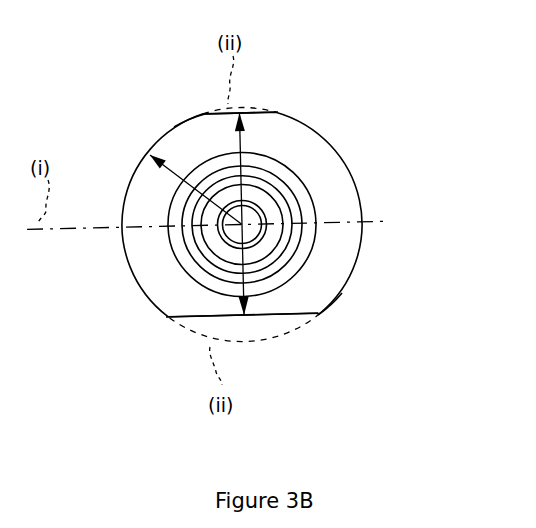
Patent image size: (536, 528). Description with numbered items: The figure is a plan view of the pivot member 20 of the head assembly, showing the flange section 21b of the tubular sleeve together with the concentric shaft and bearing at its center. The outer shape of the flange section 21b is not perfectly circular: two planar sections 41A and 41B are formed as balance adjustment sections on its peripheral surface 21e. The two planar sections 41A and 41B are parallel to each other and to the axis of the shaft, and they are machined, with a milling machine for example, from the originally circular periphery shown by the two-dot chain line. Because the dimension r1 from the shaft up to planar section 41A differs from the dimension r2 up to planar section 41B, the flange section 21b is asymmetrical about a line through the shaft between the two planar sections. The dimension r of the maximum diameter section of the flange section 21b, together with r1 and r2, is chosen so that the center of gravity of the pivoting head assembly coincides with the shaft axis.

The pivot member 20 is at (265, 225).
The flange section 21b is at (175, 127).
The peripheral surface 21e is at (342, 293).
The planar section 41A is at (277, 315).
The planar section 41B is at (262, 112).
The dimension of maximum diameter section r is at (180, 188).
The dimension up to planar section 41A r1 is at (205, 254).
The dimension up to planar section 41B r2 is at (230, 153).